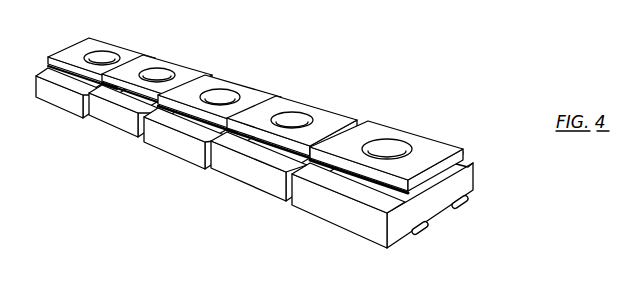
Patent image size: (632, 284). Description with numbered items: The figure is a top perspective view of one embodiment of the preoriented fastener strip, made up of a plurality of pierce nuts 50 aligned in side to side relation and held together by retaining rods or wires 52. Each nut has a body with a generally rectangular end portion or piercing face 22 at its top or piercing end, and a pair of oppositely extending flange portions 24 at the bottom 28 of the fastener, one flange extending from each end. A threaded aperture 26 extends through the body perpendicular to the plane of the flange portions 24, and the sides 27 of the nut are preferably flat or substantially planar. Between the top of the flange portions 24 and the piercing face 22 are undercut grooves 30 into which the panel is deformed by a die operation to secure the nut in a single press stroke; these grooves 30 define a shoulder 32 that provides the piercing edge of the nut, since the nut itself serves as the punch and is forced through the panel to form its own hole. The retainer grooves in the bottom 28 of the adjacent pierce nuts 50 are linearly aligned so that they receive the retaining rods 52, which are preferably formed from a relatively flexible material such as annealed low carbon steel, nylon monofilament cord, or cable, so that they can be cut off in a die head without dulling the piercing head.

The piercing face 22 is at (189, 72).
The flange portions 24 is at (186, 152).
The threaded aperture 26 is at (98, 55).
The sides 27 is at (452, 180).
The bottom 28 is at (252, 186).
The undercut grooves 30 is at (50, 62).
The shoulder 32 is at (183, 107).
The pierce nuts 50 is at (268, 86).
The retaining rods 52 is at (428, 229).